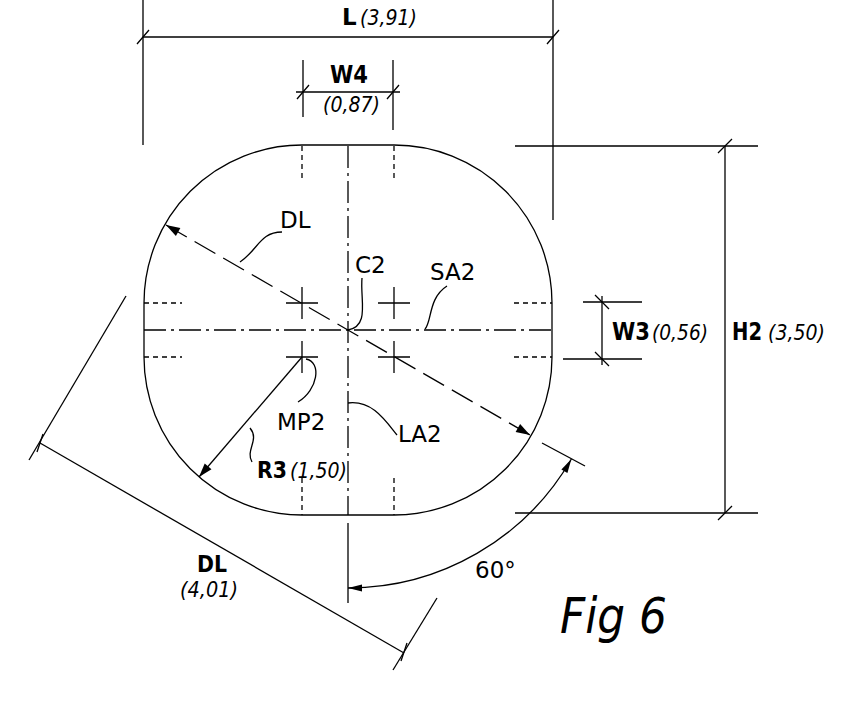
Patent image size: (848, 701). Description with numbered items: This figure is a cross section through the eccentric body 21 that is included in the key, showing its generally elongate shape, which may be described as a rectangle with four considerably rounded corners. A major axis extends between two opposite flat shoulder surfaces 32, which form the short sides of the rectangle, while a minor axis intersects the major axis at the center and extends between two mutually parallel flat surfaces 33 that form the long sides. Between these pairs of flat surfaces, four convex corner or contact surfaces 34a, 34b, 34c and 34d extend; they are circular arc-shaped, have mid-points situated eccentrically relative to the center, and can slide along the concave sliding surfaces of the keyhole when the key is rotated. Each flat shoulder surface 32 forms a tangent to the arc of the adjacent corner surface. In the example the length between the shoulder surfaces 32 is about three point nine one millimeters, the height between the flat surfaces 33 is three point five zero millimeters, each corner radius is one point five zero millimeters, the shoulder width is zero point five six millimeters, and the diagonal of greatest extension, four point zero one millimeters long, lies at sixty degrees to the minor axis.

The eccentric body 21 is at (338, 336).
The flat shoulder surface 32 is at (553, 316).
The flat surface 33 is at (322, 145).
The convex corner surface 34a is at (197, 188).
The convex corner surface 34b is at (478, 171).
The convex corner surface 34c is at (480, 490).
The convex corner surface 34d is at (185, 472).